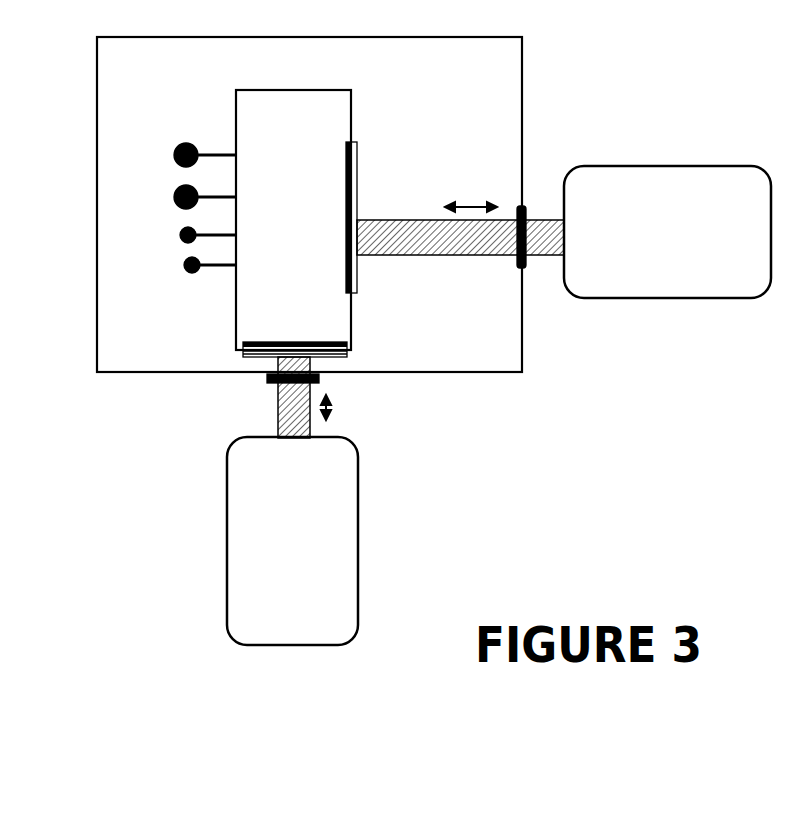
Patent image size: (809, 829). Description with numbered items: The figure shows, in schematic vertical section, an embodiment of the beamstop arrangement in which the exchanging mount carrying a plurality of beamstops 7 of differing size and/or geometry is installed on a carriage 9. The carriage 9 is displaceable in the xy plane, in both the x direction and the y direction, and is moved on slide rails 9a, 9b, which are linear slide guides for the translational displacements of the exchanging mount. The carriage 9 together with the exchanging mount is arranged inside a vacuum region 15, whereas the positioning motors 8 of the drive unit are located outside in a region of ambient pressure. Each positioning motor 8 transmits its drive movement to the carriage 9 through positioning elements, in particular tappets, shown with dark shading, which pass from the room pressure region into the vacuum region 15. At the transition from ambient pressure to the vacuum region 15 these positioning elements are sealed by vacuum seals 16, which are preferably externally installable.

The beamstops 7 is at (163, 197).
The positioning motor 8 is at (326, 508).
The carriage 9 is at (318, 130).
The slide rail 9a is at (352, 197).
The slide rail 9b is at (265, 352).
The vacuum region 15 is at (425, 91).
The vacuum seals 16 is at (522, 268).